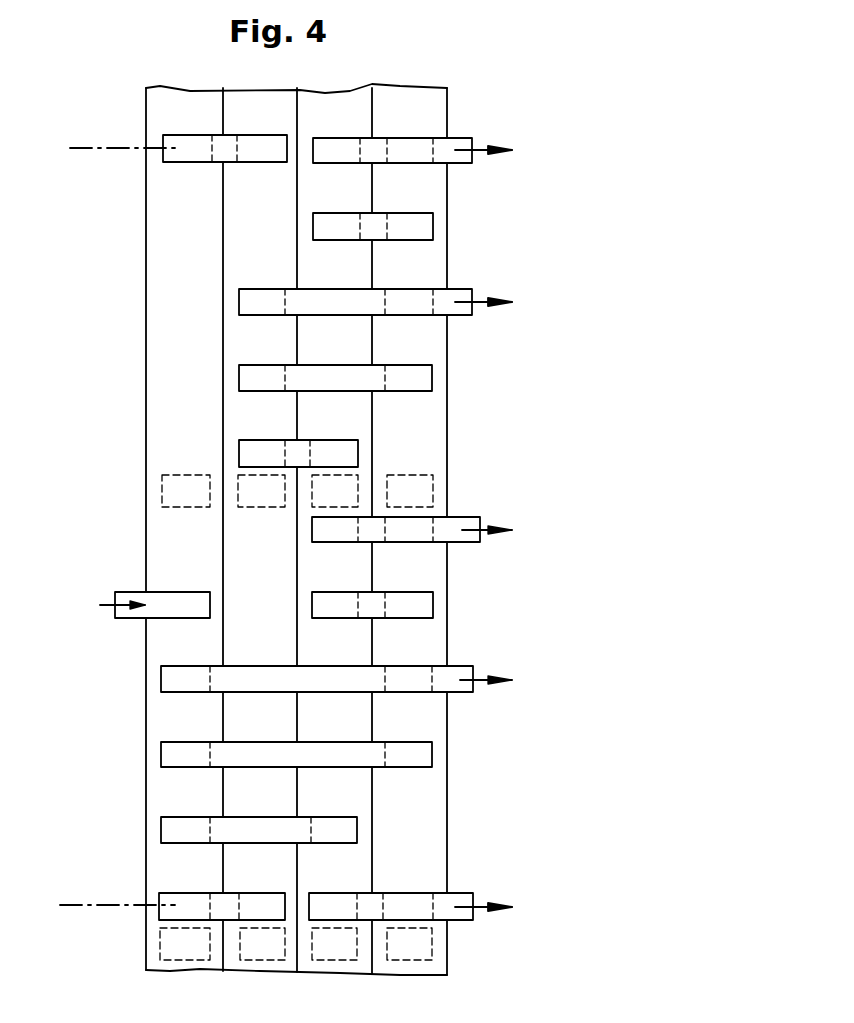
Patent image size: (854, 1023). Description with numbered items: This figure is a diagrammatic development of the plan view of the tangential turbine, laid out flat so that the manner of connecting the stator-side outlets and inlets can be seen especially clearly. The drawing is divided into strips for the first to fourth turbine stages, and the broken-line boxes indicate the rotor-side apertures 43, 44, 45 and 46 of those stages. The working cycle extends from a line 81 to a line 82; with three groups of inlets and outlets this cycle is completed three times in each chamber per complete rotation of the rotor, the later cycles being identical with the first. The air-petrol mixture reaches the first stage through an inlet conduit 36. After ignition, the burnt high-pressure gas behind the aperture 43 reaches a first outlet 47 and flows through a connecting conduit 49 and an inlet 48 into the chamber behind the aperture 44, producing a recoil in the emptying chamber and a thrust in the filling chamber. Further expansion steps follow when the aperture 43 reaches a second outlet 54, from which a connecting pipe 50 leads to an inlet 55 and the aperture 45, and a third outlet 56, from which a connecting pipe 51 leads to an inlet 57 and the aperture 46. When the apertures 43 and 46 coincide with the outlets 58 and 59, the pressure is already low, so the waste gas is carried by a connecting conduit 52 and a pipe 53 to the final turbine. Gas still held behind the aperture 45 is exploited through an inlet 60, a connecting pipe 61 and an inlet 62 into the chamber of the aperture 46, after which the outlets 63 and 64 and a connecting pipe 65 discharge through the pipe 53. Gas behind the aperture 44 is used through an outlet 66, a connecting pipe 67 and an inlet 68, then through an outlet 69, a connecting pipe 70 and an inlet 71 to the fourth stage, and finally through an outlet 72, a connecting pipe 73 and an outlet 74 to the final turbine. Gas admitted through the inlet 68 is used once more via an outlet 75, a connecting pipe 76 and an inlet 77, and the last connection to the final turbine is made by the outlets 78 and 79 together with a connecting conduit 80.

The inlet conduit 36 is at (143, 612).
The rotor-side aperture of the first turbine stage 43 is at (178, 955).
The rotor-side aperture of the second turbine stage 44 is at (257, 955).
The rotor-side aperture of the third turbine stage 45 is at (330, 955).
The rotor-side aperture of the fourth turbine stage 46 is at (413, 955).
The first outlet 47 is at (178, 903).
The inlet 48 is at (270, 903).
The connecting conduit 49 is at (227, 908).
The connecting pipe 50 is at (268, 828).
The connecting pipe 51 is at (248, 755).
The connecting conduit 52 is at (335, 682).
The pipe 53 is at (458, 522).
The second outlet 54 is at (175, 830).
The inlet 55 is at (328, 830).
The third outlet 56 is at (178, 750).
The inlet 57 is at (410, 760).
The outlet 58 is at (182, 677).
The outlet 59 is at (413, 685).
The inlet 60 is at (318, 605).
The connecting pipe 61 is at (367, 610).
The inlet 62 is at (422, 605).
The outlet 63 is at (320, 527).
The outlet 64 is at (405, 532).
The connecting pipe 65 is at (367, 532).
The outlet 66 is at (250, 452).
The connecting pipe 67 is at (293, 445).
The inlet 68 is at (342, 452).
The outlet 69 is at (257, 373).
The connecting pipe 70 is at (325, 380).
The inlet 71 is at (413, 383).
The outlet 72 is at (260, 302).
The connecting pipe 73 is at (342, 307).
The outlet 74 is at (410, 308).
The outlet 75 is at (337, 233).
The connecting pipe 76 is at (375, 223).
The inlet 77 is at (412, 233).
The outlet 78 is at (336, 147).
The outlet 79 is at (417, 147).
The connecting conduit 80 is at (370, 153).
The line 81 is at (72, 908).
The line 82 is at (83, 149).